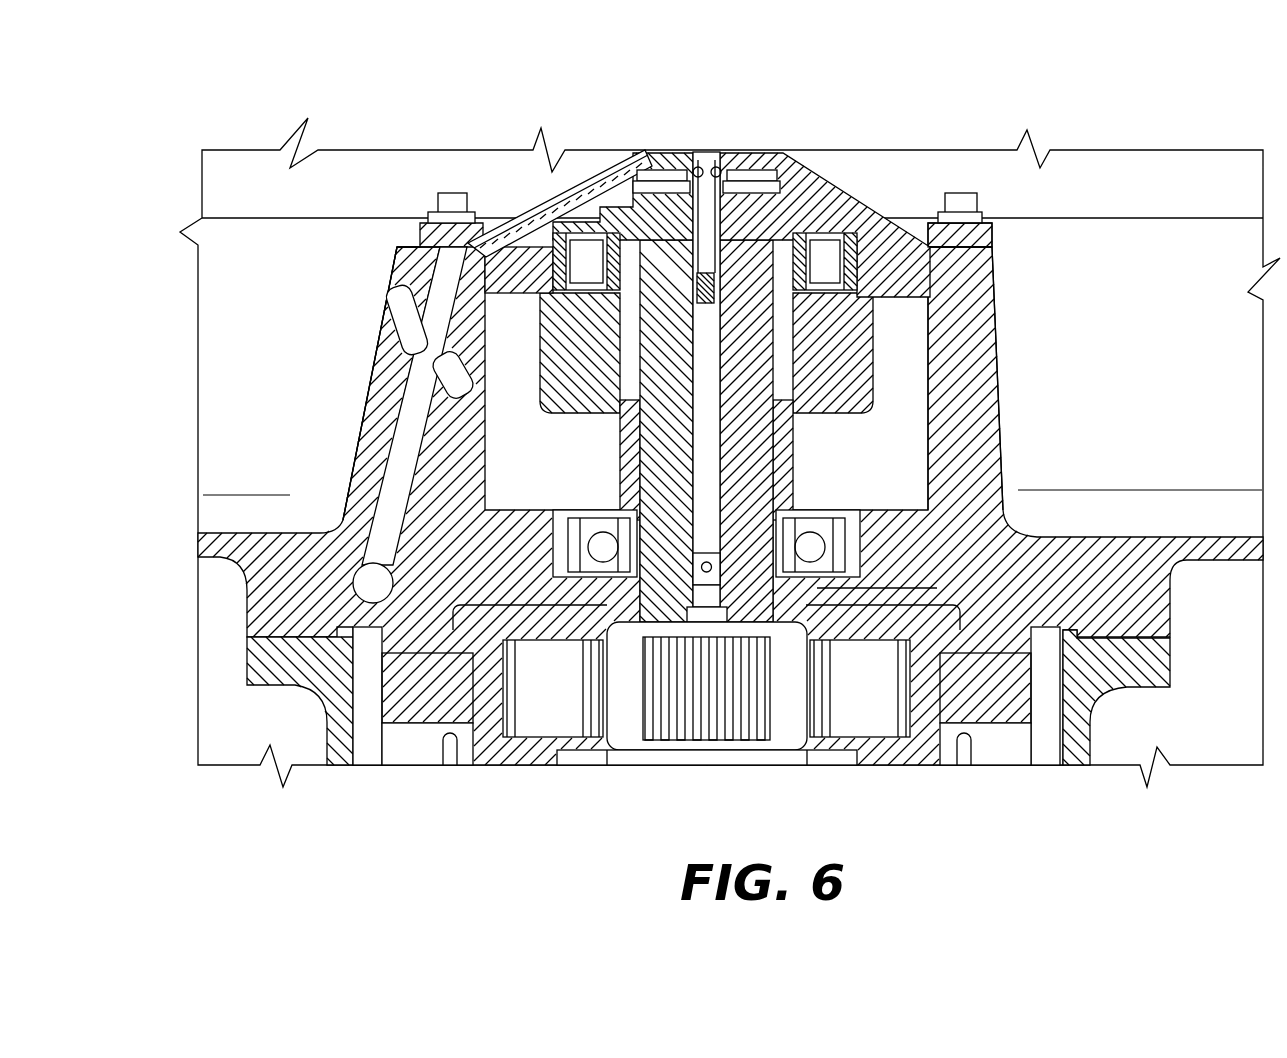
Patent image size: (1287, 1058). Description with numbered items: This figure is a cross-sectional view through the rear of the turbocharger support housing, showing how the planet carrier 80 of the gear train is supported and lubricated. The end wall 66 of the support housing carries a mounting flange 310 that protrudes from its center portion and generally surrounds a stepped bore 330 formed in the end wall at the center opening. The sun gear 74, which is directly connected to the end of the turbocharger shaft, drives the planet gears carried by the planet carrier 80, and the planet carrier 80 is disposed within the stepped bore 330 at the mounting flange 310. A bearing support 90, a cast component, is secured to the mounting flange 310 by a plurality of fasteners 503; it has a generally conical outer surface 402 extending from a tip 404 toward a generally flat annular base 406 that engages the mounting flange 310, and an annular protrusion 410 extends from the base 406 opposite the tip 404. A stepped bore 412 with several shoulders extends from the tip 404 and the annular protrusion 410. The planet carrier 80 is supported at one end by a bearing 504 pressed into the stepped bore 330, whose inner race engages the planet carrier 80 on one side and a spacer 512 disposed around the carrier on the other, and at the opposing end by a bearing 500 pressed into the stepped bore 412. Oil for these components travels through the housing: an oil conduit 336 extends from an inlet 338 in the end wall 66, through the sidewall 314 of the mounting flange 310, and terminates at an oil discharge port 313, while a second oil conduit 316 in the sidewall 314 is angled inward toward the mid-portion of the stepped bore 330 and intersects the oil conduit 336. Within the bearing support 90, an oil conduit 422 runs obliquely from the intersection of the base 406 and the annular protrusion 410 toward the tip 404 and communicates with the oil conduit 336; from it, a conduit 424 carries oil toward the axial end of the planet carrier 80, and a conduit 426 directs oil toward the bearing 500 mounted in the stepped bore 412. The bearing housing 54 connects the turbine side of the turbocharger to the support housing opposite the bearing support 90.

The bearing housing 54 is at (1131, 679).
The end wall 66 is at (1131, 596).
The sun gear 74 is at (720, 717).
The planet carrier 80 is at (683, 424).
The bearing support 90 is at (780, 153).
The mounting flange 310 is at (989, 396).
The oil discharge port 313 is at (400, 250).
The sidewall 314 is at (352, 416).
The oil conduit 316 is at (400, 330).
The stepped bore 330 is at (580, 567).
The oil conduit 336 is at (397, 462).
The inlet 338 is at (362, 577).
The conical outer surface 402 is at (795, 153).
The tip 404 is at (740, 150).
The annular base 406 is at (985, 238).
The annular protrusion 410 is at (884, 210).
The stepped bore 412 is at (850, 290).
The oil conduit 422 is at (631, 152).
The conduit 424 is at (695, 150).
The conduit 426 is at (573, 217).
The bearing 500 is at (832, 252).
The fasteners 503 is at (448, 192).
The bearing 504 is at (818, 562).
The spacer 512 is at (782, 468).